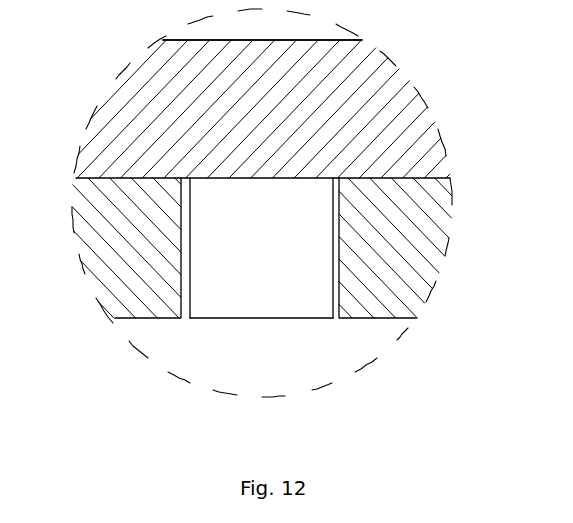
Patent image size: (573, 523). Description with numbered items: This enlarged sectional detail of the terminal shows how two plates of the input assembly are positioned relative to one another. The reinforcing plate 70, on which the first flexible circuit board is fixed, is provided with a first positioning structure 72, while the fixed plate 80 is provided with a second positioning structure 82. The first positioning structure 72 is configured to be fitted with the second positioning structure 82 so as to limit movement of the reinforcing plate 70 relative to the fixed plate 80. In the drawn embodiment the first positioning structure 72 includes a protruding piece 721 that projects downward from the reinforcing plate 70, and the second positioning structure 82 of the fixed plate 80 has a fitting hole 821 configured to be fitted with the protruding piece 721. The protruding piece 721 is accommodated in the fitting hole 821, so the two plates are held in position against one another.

The reinforcing plate 70 is at (388, 112).
The first positioning structure 72 is at (176, 136).
The fixed plate 80 is at (410, 257).
The second positioning structure 82 is at (150, 243).
The fitting hole 821 is at (338, 303).
The protruding piece 721 is at (273, 297).